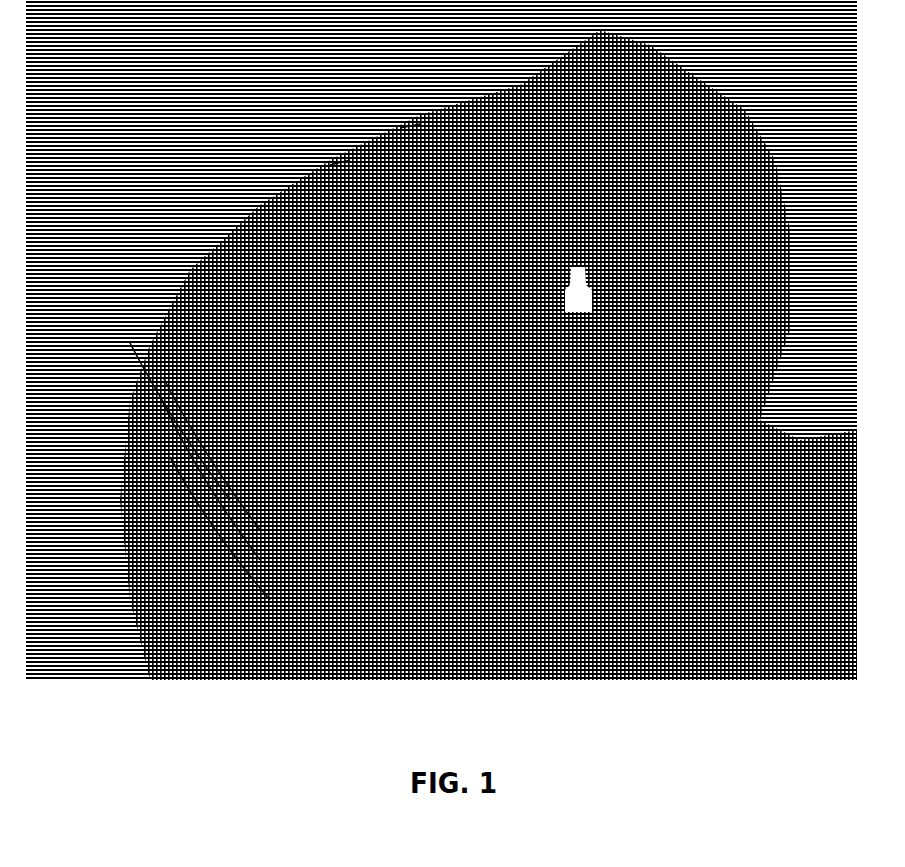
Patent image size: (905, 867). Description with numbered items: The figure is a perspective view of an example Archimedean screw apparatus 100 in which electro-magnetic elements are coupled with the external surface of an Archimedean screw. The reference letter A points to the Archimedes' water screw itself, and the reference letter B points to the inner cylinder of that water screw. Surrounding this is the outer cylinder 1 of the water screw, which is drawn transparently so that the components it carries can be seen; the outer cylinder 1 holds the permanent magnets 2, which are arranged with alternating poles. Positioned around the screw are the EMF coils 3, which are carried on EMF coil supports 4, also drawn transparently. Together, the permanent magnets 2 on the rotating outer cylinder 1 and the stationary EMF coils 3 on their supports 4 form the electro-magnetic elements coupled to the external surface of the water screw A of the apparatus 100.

The Archimedean screw apparatus 100 is at (313, 62).
The Archimedes' water screw A is at (400, 133).
The inner cylinder B is at (330, 170).
The outer cylinder 1 is at (130, 343).
The permanent magnets 2 is at (163, 377).
The EMF coils 3 is at (163, 403).
The EMF coil supports 4 is at (170, 457).